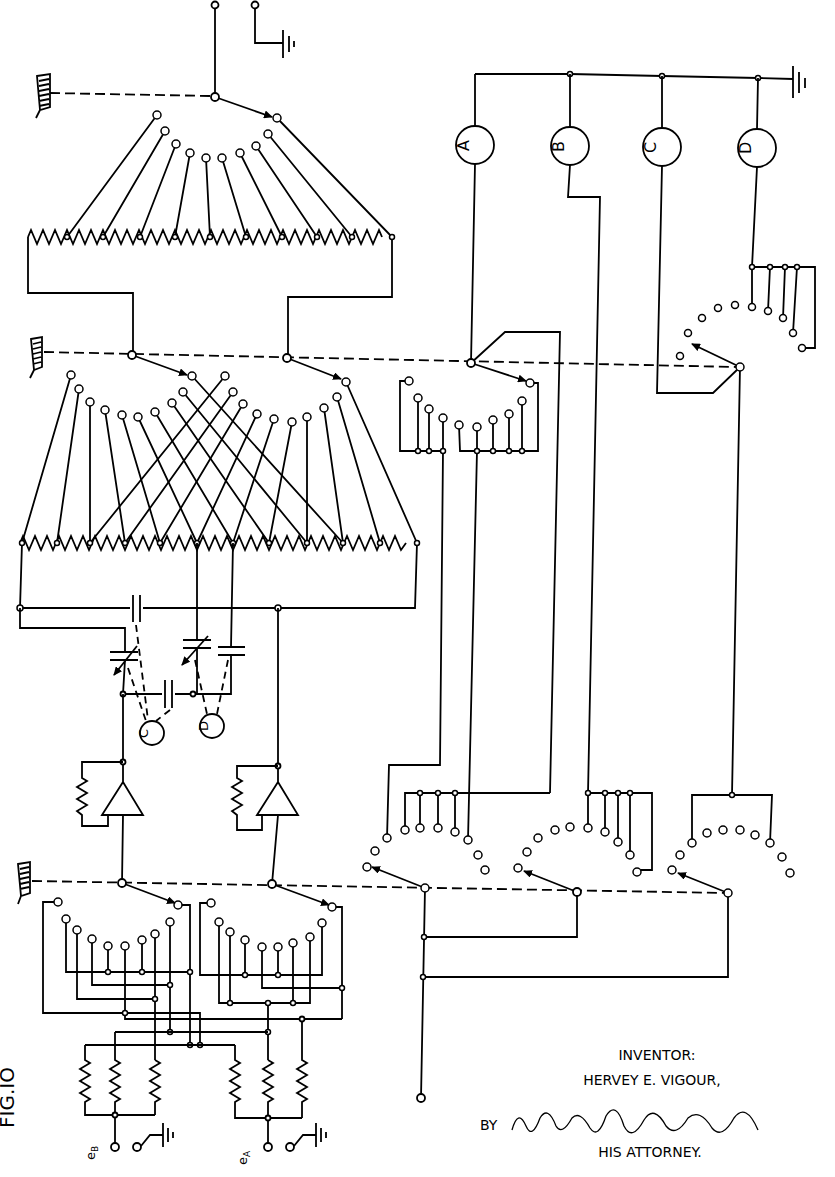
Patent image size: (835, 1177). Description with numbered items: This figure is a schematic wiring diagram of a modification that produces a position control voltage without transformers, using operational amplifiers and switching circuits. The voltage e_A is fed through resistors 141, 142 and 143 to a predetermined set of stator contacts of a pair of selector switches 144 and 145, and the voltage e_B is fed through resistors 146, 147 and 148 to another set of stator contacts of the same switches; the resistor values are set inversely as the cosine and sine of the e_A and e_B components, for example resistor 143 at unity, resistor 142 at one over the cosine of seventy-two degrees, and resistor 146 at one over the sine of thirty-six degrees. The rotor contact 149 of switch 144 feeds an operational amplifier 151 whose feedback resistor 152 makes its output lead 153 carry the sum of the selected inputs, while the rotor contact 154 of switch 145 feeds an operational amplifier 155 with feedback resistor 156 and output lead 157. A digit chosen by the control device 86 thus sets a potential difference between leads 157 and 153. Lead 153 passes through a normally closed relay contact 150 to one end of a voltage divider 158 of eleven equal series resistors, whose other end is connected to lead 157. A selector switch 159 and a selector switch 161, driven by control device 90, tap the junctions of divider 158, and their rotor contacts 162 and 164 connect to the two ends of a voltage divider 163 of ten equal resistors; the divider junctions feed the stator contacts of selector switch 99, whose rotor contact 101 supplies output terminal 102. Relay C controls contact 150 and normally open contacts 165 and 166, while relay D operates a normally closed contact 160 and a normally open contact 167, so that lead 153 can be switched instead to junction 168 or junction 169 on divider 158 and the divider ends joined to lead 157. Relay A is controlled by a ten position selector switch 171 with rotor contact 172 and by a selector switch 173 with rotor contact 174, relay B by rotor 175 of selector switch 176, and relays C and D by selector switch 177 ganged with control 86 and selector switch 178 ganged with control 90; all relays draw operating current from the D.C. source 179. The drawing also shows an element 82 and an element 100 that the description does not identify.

The ground terminal 82 is at (258, 5).
The control device 86 is at (20, 904).
The control device 90 is at (35, 372).
The selector switch 99 is at (210, 107).
The motor 100 is at (36, 112).
The rotor contact 101 is at (262, 110).
The output terminal 102 is at (211, 7).
The resistor 141 is at (228, 1090).
The resistor 142 is at (260, 1100).
The resistor 143 is at (310, 1092).
The selector switch 144 is at (112, 905).
The selector switch 145 is at (260, 898).
The resistor 146 is at (75, 1085).
The resistor 147 is at (108, 1100).
The resistor 148 is at (165, 1085).
The rotor contact 149 is at (150, 893).
The normally closed relay contact 150 is at (110, 657).
The operational amplifier 151 is at (133, 787).
The feedback resistor 152 is at (78, 790).
The output lead 153 is at (122, 733).
The rotor contact 154 is at (300, 897).
The operational amplifier 155 is at (285, 785).
The feedback resistor 156 is at (229, 790).
The output lead 157 is at (277, 733).
The voltage divider 158 is at (410, 555).
The selector switch 159 is at (272, 372).
The normally closed contact 160 is at (190, 645).
The selector switch 161 is at (120, 368).
The rotor contact 162 is at (314, 372).
The voltage divider 163 is at (385, 250).
The rotor contact 164 is at (160, 370).
The normally open contact 165 is at (170, 680).
The normally open contact 166 is at (131, 606).
The normally open contact 167 is at (243, 645).
The junction 168 is at (199, 556).
The junction 169 is at (233, 560).
The ten position selector switch 171 is at (430, 895).
The rotor contact 172 is at (405, 870).
The selector switch 173 is at (462, 380).
The rotor contact 174 is at (498, 380).
The rotor 175 is at (560, 878).
The selector switch 176 is at (572, 900).
The selector switch 177 is at (738, 872).
The selector switch 178 is at (755, 348).
The D.C. source 179 is at (418, 1094).